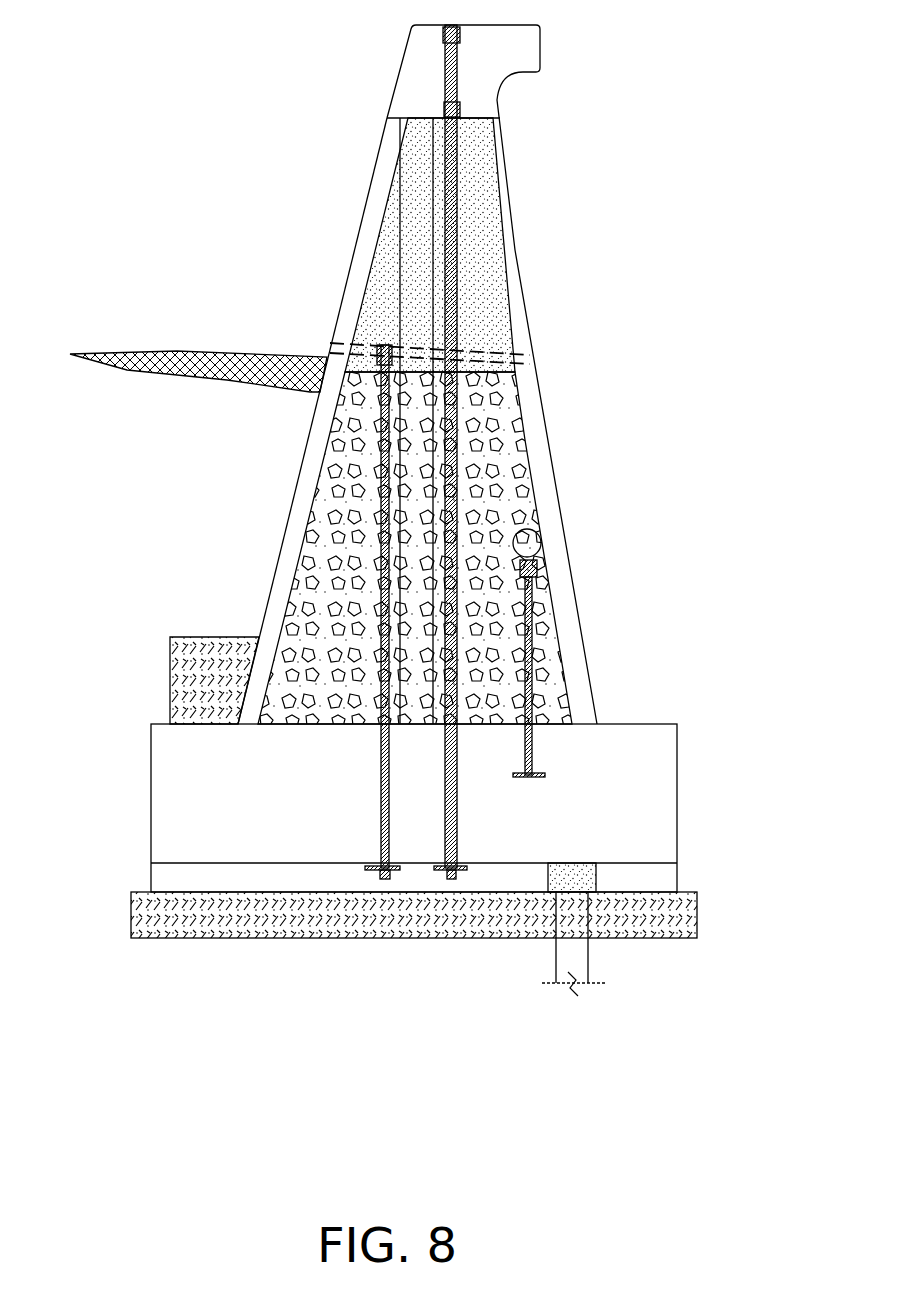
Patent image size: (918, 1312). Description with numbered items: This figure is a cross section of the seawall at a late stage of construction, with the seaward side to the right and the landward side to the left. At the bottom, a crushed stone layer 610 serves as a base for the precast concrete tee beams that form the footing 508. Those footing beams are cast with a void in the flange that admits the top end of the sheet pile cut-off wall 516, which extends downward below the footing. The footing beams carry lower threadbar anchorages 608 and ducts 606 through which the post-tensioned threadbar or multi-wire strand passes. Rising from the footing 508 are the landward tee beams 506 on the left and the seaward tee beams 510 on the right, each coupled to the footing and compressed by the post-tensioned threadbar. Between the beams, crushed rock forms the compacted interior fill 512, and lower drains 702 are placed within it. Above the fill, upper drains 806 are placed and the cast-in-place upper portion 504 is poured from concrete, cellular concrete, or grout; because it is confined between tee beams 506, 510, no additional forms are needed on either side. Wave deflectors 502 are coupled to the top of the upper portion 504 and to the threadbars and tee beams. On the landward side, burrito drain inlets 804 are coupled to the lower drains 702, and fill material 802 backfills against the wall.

The wave deflectors 502 is at (400, 80).
The cast-in-place upper portion 504 is at (410, 187).
The landward tee beams 506 is at (365, 250).
The seaward tee beams 510 is at (520, 315).
The interior fill 512 is at (335, 470).
The footing 508 is at (158, 820).
The ducts 606 is at (380, 764).
The threadbar anchorages 608 is at (370, 868).
The crushed stone layer 610 is at (130, 910).
The sheet pile cut-off wall 516 is at (556, 955).
The drains 702 is at (256, 685).
The fill material 802 is at (148, 355).
The burrito drain inlets 804 is at (333, 345).
The upper drains 806 is at (175, 637).